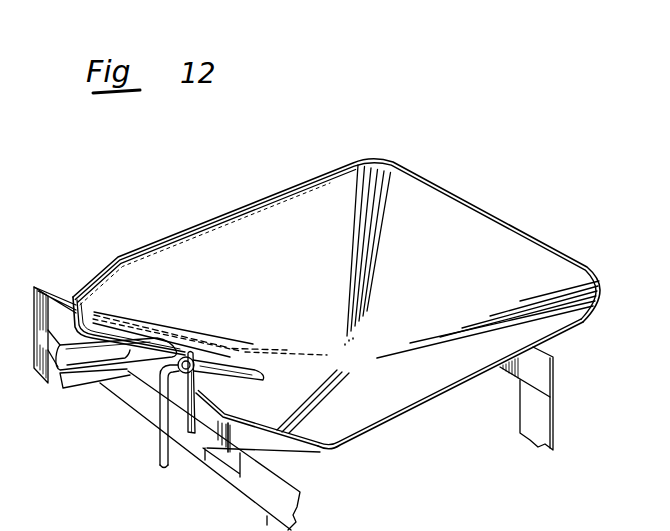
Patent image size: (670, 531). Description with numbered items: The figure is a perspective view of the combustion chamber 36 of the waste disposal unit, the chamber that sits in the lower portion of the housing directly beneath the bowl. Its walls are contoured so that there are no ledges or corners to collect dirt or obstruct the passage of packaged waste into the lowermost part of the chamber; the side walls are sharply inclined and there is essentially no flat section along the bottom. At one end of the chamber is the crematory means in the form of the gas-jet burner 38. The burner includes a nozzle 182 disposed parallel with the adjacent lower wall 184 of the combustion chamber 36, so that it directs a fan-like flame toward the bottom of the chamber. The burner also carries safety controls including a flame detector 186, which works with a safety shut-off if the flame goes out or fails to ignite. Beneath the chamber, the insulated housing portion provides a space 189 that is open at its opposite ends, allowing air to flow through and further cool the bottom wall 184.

The combustion chamber 36 is at (308, 292).
The gas-jet burner 38 is at (229, 377).
The nozzle 182 is at (216, 357).
The lower wall 184 is at (293, 406).
The flame detector 186 is at (265, 374).
The space 189 is at (416, 451).